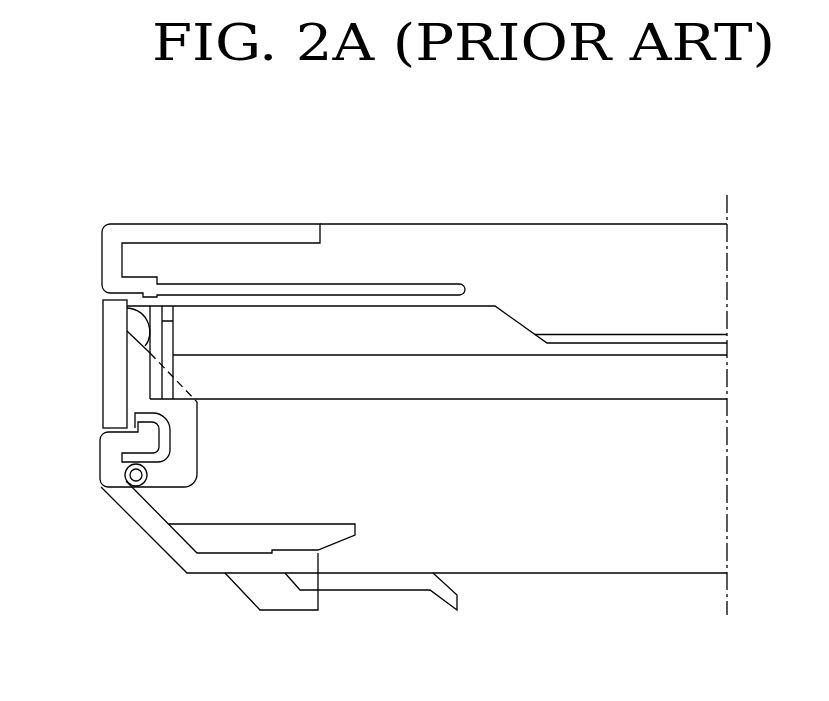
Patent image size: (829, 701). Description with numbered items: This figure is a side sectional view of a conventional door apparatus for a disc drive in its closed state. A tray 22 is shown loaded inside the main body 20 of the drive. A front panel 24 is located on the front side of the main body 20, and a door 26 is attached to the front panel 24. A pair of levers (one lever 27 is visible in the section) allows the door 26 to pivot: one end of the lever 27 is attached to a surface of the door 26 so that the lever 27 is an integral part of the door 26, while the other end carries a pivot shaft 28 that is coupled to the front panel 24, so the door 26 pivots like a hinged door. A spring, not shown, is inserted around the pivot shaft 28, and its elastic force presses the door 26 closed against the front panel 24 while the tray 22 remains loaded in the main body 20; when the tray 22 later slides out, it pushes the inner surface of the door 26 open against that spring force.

The main body 20 is at (625, 224).
The tray 22 is at (505, 337).
The front panel 24 is at (145, 517).
The door 26 is at (112, 359).
The lever 27 is at (185, 447).
The pivot shaft 28 is at (136, 475).